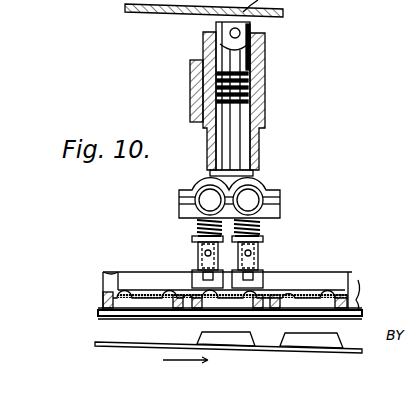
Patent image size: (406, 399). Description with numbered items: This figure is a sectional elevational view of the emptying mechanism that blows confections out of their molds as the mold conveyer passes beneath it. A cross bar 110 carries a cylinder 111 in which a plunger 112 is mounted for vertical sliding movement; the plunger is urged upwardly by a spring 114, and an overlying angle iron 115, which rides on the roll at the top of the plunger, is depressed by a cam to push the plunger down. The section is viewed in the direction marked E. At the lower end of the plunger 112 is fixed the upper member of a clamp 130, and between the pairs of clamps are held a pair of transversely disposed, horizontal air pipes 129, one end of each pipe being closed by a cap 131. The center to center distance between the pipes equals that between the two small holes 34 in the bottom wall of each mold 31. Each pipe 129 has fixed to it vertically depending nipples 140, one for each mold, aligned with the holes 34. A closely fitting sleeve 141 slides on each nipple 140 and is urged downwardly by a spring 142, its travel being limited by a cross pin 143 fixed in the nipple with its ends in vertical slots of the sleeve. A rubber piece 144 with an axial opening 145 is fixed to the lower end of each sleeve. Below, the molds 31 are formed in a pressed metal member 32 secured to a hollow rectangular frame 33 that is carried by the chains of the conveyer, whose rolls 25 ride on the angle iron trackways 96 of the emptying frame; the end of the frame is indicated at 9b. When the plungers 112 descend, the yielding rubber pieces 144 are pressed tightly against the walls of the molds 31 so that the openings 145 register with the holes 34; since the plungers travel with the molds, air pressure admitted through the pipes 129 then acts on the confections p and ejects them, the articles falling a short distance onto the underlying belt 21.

The angle iron 115 is at (190, 16).
The cross bar 110 is at (192, 63).
The plunger 112 is at (207, 134).
The cylinder 111 is at (262, 95).
The spring 114 is at (250, 76).
The section indicator E is at (328, 107).
The pipe 129 is at (260, 178).
The clamp 130 is at (180, 196).
The cap 131 is at (264, 191).
The spring 142 is at (197, 228).
The cross pin 143 is at (262, 238).
The sleeve 141 is at (196, 247).
The nipple 140 is at (264, 226).
The rubber piece 144 is at (193, 281).
The axial opening 145 is at (264, 264).
The roll 25 is at (118, 272).
The pressed metal member 32 is at (103, 275).
The strip end 9b is at (100, 310).
The hole 34 is at (300, 297).
The trackway 96 is at (354, 288).
The frame 33 is at (360, 298).
The mold 31 is at (340, 318).
The belt 21 is at (276, 350).
The confection p is at (134, 346).